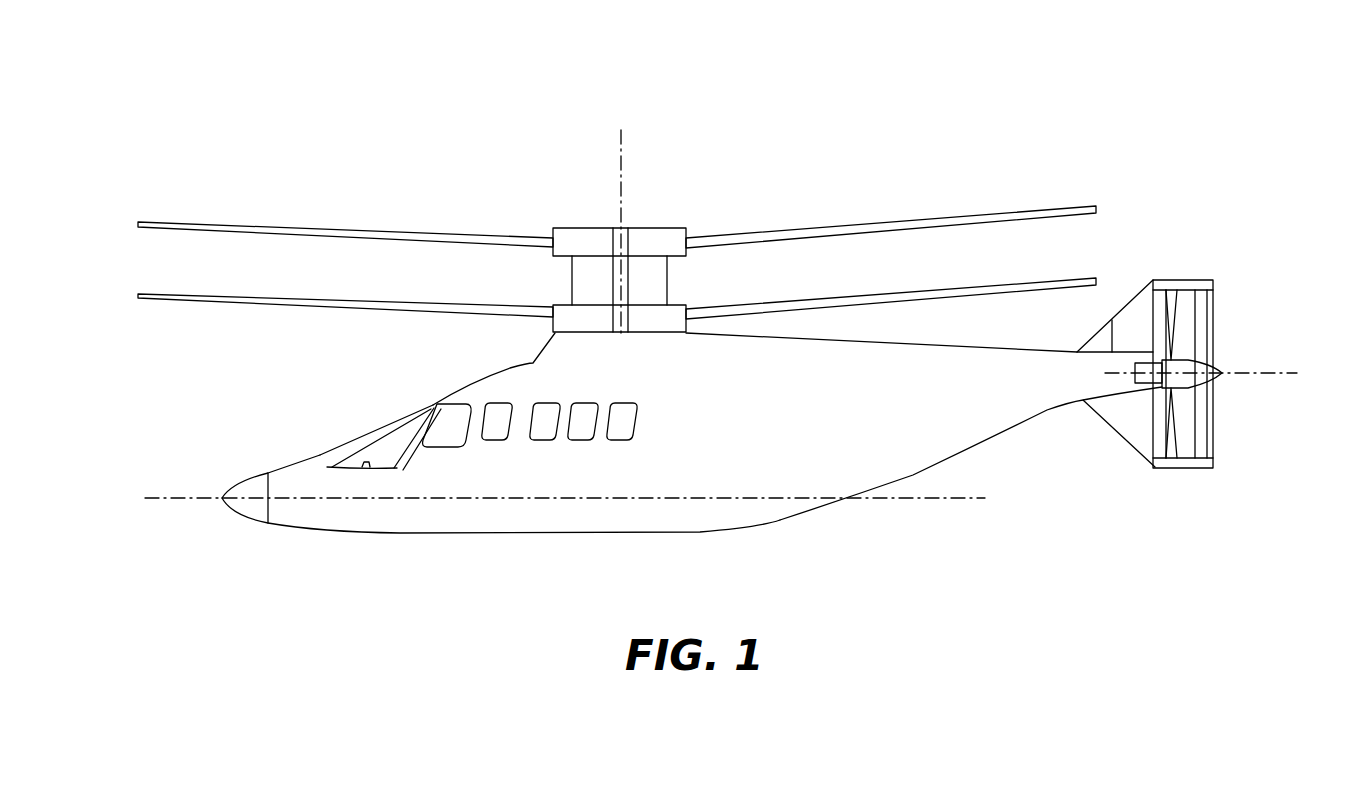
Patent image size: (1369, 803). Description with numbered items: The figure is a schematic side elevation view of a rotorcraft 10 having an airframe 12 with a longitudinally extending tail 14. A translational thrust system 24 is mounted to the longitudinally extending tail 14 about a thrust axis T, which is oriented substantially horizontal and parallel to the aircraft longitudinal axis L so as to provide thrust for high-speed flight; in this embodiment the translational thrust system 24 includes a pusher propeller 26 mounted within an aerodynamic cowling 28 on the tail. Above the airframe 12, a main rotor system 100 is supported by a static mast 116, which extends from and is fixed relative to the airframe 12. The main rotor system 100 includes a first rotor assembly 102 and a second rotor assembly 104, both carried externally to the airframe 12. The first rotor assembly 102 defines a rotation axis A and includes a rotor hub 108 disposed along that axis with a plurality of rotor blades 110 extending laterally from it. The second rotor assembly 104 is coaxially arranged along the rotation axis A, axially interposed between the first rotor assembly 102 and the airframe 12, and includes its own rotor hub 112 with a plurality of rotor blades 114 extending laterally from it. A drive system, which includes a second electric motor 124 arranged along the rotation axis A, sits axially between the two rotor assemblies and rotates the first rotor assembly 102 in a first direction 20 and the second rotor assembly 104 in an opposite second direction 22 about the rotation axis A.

The rotorcraft 10 is at (468, 605).
The airframe 12 is at (452, 392).
The longitudinally extending tail 14 is at (893, 453).
The first direction 20 is at (593, 218).
The second direction 22 is at (592, 287).
The translational thrust system 24 is at (1230, 320).
The pusher propeller 26 is at (1177, 345).
The aerodynamic cowling 28 is at (1183, 286).
The main rotor system 100 is at (266, 190).
The first rotor assembly 102 is at (671, 202).
The second rotor assembly 104 is at (732, 292).
The rotor hub 108 is at (686, 228).
The rotor blades 110 is at (926, 217).
The rotor hub 112 is at (652, 303).
The rotor blades 114 is at (1031, 278).
The static mast 116 is at (619, 273).
The second electric motor 124 is at (572, 270).
The rotation axis A is at (622, 154).
The aircraft longitudinal axis L is at (950, 497).
The thrust axis T is at (1250, 378).